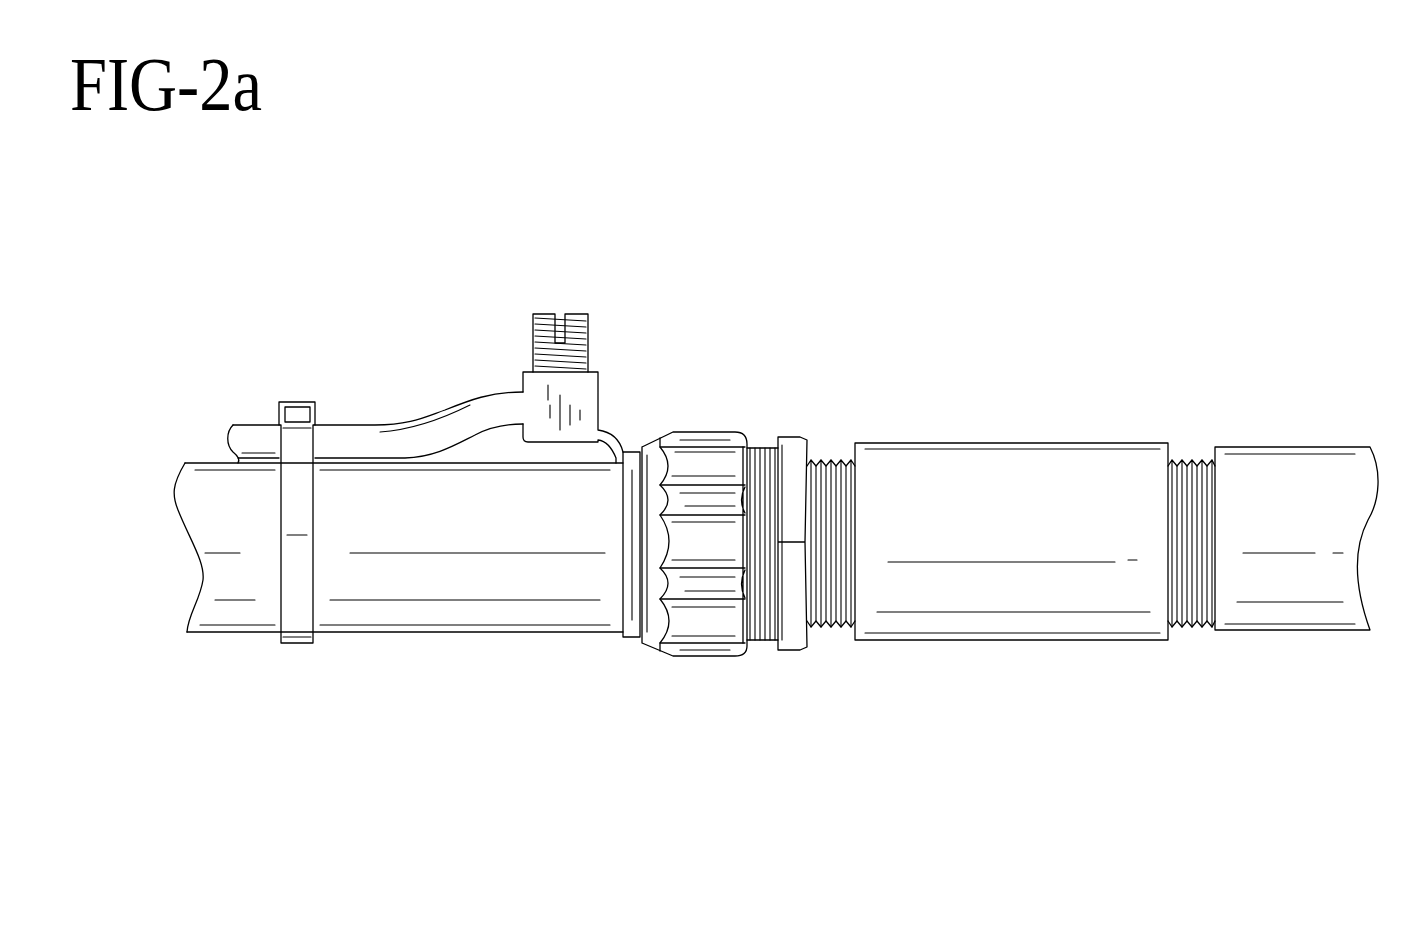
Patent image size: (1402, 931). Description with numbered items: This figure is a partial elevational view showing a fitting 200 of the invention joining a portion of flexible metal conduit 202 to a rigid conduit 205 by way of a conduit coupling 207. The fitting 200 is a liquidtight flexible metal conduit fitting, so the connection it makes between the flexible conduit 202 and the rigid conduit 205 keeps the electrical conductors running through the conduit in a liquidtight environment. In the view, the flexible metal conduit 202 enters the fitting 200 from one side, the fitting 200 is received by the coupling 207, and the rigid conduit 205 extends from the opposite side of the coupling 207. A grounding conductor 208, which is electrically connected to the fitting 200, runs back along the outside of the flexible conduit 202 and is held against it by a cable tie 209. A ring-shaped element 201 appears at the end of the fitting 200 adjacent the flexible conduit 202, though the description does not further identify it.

The fitting 200 is at (666, 744).
The grounding ring 201 is at (620, 663).
The flexible metal conduit 202 is at (465, 632).
The conduit 205 is at (1270, 630).
The coupling 207 is at (978, 640).
The grounding conductor 208 is at (460, 400).
The cable tie 209 is at (278, 604).